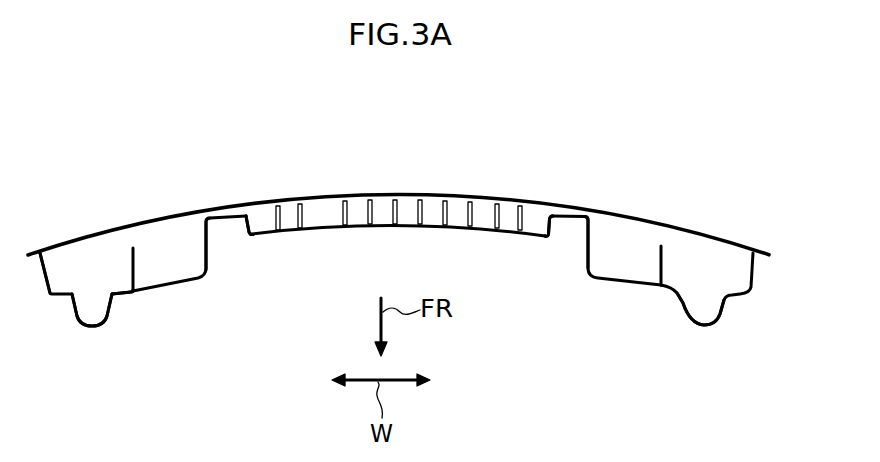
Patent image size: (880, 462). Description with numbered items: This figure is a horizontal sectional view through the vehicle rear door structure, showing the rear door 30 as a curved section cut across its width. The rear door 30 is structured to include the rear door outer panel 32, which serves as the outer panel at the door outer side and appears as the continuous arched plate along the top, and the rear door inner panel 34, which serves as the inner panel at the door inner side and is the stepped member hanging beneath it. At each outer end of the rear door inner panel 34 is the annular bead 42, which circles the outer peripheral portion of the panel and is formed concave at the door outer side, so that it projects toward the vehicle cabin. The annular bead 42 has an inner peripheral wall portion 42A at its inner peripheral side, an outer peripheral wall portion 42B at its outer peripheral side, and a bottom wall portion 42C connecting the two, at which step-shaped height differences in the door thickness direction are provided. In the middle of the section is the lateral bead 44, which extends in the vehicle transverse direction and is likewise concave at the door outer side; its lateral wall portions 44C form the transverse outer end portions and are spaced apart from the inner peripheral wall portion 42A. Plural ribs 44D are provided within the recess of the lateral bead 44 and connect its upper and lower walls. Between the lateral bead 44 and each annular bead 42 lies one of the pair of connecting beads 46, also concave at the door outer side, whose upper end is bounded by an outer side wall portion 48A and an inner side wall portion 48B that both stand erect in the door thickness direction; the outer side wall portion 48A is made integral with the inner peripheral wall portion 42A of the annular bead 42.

The rear door 30 is at (593, 152).
The rear door outer panel 32 is at (631, 210).
The rear door inner panel 34 is at (770, 300).
The annular bead 42 is at (91, 352).
The inner peripheral wall portion 42A is at (130, 272).
The outer peripheral wall portion 42B is at (48, 258).
The bottom wall portion 42C is at (706, 319).
The lateral bead 44 is at (500, 258).
The lateral wall portions 44C is at (250, 215).
The ribs 44D is at (282, 213).
The connecting beads 46 is at (172, 312).
The outer side wall portion 48A is at (135, 257).
The inner side wall portion 48B is at (203, 233).